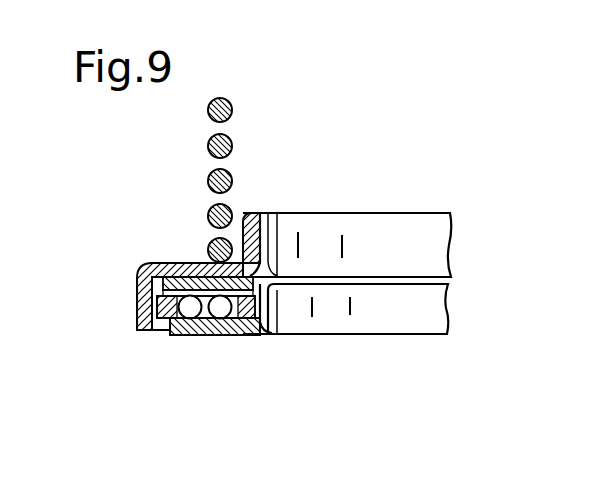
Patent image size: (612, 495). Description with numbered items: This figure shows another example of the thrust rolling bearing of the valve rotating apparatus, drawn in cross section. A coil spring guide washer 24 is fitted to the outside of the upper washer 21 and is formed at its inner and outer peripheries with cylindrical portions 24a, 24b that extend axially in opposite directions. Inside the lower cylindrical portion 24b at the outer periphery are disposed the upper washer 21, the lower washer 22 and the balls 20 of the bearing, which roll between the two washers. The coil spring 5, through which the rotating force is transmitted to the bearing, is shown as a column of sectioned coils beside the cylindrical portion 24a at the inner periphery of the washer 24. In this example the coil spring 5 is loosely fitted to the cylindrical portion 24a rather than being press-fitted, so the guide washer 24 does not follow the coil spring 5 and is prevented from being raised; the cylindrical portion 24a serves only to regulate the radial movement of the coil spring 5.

The coil spring 5 is at (207, 150).
The ball 20 is at (222, 314).
The upper washer 21 is at (183, 282).
The lower washer 22 is at (395, 312).
The coil spring guide washer 24 is at (428, 240).
The cylindrical portion 24a is at (262, 235).
The lower cylindrical portion 24b is at (138, 297).